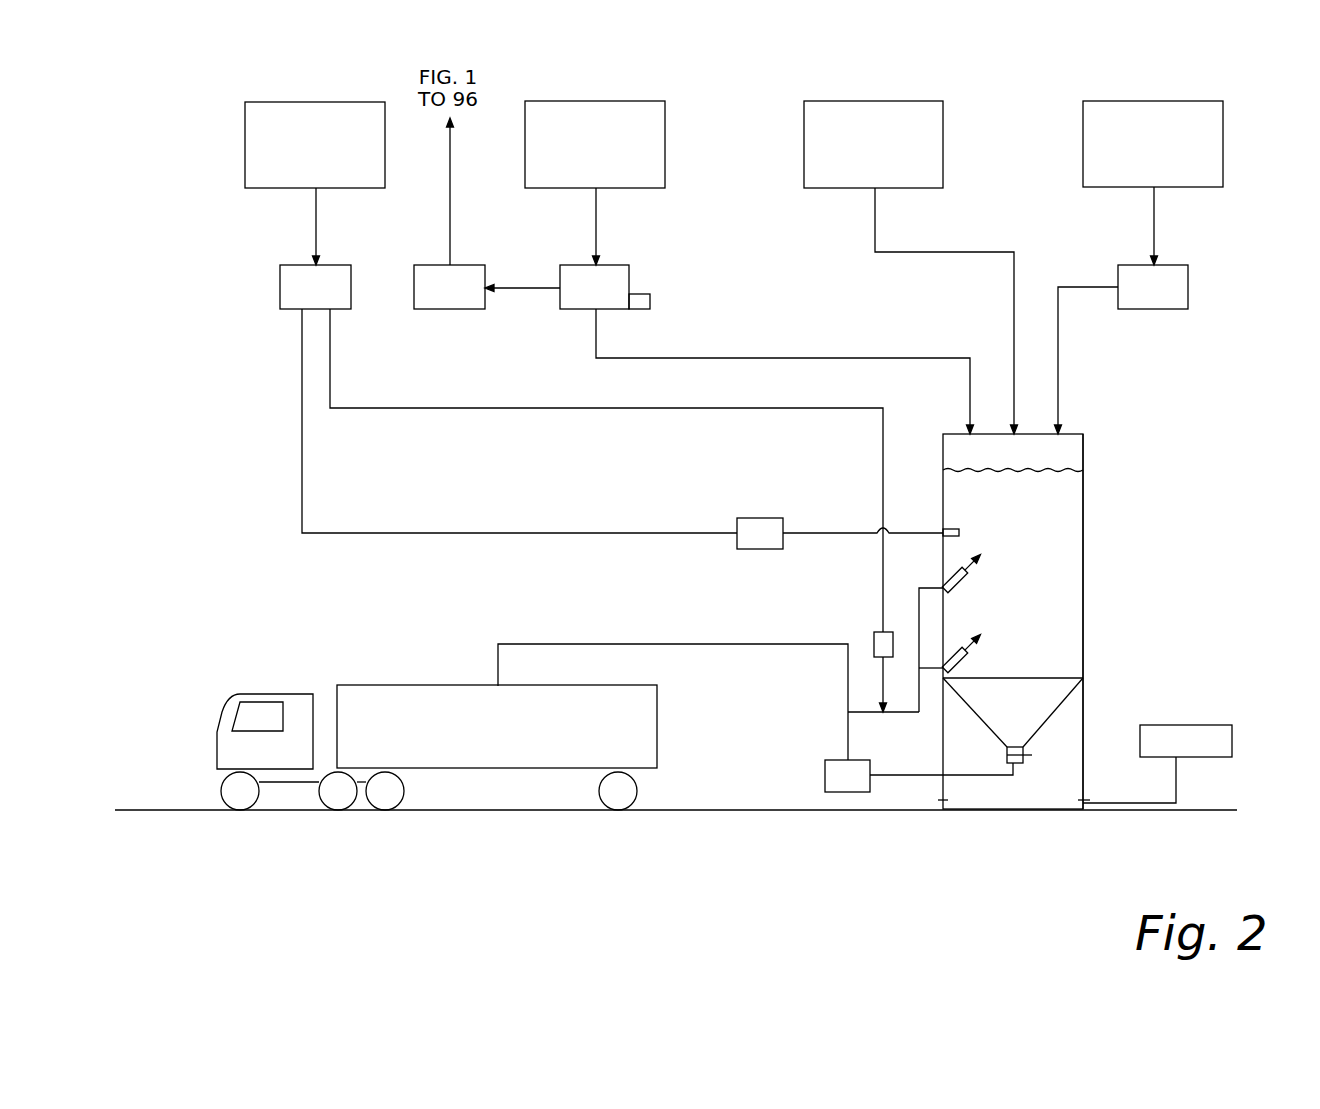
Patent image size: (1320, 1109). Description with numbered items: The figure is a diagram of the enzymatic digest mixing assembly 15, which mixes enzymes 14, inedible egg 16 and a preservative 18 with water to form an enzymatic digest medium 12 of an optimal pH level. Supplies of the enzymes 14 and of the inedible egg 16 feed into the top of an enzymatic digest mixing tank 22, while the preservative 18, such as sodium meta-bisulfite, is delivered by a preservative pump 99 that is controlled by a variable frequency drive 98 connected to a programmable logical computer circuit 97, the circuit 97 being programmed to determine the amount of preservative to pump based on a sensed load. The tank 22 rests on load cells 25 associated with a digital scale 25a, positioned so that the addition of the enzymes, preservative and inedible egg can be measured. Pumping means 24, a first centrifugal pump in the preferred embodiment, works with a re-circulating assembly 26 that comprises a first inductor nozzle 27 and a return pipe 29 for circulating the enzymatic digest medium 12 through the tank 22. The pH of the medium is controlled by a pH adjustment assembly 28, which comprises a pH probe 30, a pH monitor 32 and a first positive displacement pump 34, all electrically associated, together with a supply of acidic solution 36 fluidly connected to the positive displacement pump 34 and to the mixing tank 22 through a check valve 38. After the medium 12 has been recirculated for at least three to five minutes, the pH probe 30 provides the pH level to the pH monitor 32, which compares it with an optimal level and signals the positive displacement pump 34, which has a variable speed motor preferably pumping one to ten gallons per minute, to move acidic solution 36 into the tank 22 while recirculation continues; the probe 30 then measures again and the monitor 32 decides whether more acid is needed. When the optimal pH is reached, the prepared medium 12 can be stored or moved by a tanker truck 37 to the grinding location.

The enzymatic digest medium 12 is at (1038, 510).
The enzymes 14 is at (865, 101).
The enzymatic digest mixing assembly 15 is at (216, 401).
The inedible egg 16 is at (1146, 101).
The preservative 18 is at (583, 101).
The enzymatic digest mixing tank 22 is at (1085, 540).
The pumping means 24 is at (877, 632).
The load cells 25 is at (943, 809).
The digital scale 25a is at (1186, 725).
The re-circulating assembly 26 is at (873, 712).
The first inductor nozzle 27 is at (964, 666).
The pH adjustment assembly 28 is at (222, 88).
The return pipe 29 is at (905, 777).
The pH probe 30 is at (957, 528).
The pH monitor 32 is at (760, 518).
The first positive displacement pump 34 is at (287, 265).
The acidic solution 36 is at (316, 102).
The tanker truck 37 is at (538, 686).
The check valve 38 is at (883, 630).
The programmable logical computer circuit 97 is at (450, 309).
The variable frequency drive 98 is at (652, 298).
The preservative pump 99 is at (618, 265).